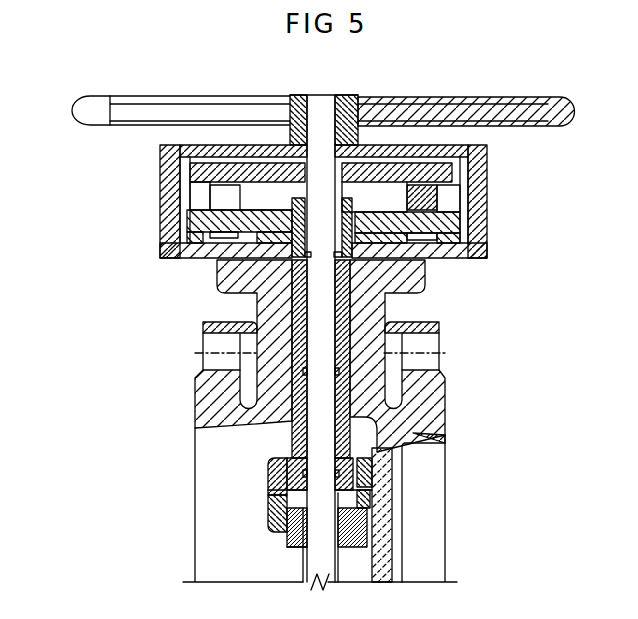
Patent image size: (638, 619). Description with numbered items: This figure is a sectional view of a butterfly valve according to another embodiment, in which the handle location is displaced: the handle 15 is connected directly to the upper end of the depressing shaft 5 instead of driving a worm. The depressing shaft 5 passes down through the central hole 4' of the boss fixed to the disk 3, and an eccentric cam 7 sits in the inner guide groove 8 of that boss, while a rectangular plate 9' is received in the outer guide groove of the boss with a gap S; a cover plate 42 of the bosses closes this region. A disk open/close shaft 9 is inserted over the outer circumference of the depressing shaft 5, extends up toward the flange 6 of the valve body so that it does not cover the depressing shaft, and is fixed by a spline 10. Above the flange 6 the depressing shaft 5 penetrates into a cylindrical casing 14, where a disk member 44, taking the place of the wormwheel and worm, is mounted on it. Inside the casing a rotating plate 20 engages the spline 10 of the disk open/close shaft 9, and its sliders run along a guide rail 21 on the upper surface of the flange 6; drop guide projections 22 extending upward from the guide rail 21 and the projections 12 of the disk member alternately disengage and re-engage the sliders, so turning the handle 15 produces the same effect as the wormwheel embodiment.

The handle 15 is at (77, 104).
The depressing shaft 5 is at (328, 120).
The disk member 44 is at (443, 175).
The cylindrical casing 14 is at (165, 178).
The drop guide projection 22 is at (450, 200).
The projection 12 is at (220, 198).
The guide rail 21 is at (460, 240).
The rotating plate 20 is at (268, 237).
The spline 10 is at (348, 222).
The flange 6 is at (482, 258).
The disk open/close shaft 9 is at (256, 344).
The rectangular plate 9' is at (410, 493).
The inner guide groove 8 is at (380, 449).
The gap S is at (368, 474).
The cover plate of the bosses 42 is at (268, 475).
The central hole 4' is at (250, 518).
The disk 3 is at (383, 558).
The eccentric cam 7 is at (290, 550).